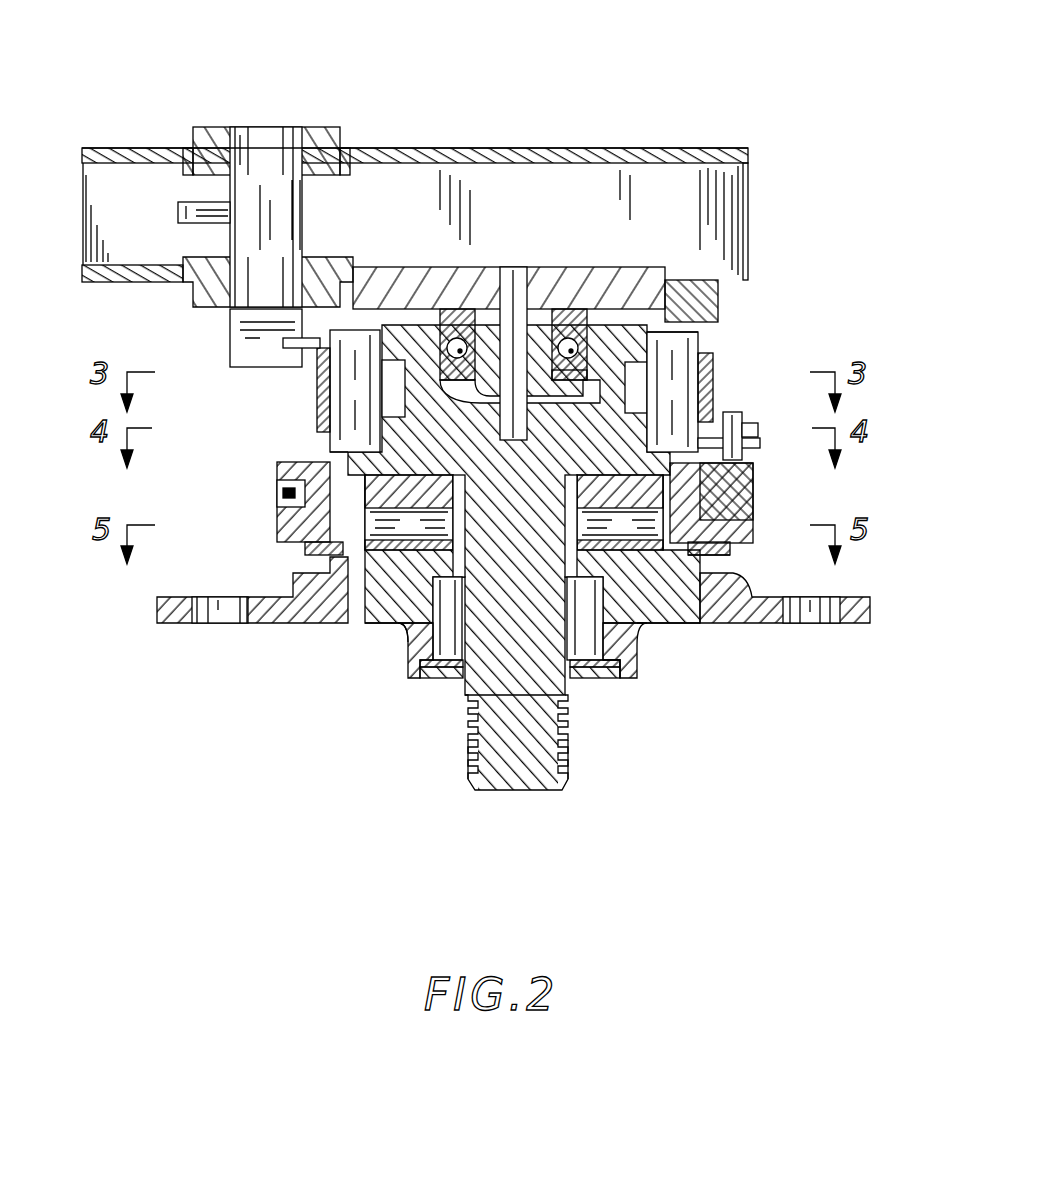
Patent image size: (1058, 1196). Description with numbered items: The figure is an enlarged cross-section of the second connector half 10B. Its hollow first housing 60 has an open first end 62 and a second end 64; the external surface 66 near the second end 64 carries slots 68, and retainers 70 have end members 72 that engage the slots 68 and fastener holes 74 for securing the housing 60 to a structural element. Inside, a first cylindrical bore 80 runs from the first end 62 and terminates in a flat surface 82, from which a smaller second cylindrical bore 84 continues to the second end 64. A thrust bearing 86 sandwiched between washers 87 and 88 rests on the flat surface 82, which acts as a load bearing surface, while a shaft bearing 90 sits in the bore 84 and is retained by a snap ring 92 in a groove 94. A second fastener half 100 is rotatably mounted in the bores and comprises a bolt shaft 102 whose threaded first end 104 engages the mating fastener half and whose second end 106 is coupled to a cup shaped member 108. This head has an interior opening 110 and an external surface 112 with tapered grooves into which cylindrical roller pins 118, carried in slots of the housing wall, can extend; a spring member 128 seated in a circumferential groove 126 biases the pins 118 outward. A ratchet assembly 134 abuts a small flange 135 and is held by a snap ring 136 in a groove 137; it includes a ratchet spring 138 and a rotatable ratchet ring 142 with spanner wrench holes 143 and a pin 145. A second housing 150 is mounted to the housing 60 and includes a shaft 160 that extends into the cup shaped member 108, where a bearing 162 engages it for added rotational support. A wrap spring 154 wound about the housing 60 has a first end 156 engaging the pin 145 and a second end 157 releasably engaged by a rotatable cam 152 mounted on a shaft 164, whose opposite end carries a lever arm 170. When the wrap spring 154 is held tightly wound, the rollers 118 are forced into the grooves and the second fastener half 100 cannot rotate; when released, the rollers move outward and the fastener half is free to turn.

The second connector half 10B is at (718, 90).
The second housing 150 is at (568, 150).
The lever arm 170 is at (180, 210).
The shaft 164 is at (320, 205).
The interior opening 110 is at (457, 336).
The cup shaped member 108 is at (503, 370).
The bearing 162 is at (570, 337).
The open first end 62 is at (688, 280).
The first housing 60 is at (722, 293).
The external surface 112 is at (648, 338).
The shaft 160 is at (577, 388).
The circumferential groove 126 is at (650, 372).
The spring member 128 is at (705, 362).
The pin 145 is at (733, 412).
The first end 156 is at (752, 428).
The second fastener half 100 is at (700, 443).
The washer 88 is at (690, 472).
The ratchet ring 142 is at (757, 492).
The thrust bearing 86 is at (665, 516).
The ratchet spring 138 is at (732, 548).
The second end 106 is at (700, 556).
The cam 152 is at (230, 328).
The second end 157 is at (283, 343).
The wrap spring 154 is at (320, 378).
The first cylindrical bore 80 is at (372, 460).
The roller pins 118 is at (380, 445).
The flange 135 is at (330, 462).
The spanner wrench holes 143 is at (277, 488).
The ratchet assembly 134 is at (278, 511).
The snap ring 136 is at (305, 548).
The external surface 66 is at (330, 562).
The fastener holes 74 is at (213, 607).
The retainers 70 is at (262, 625).
The end members 72 is at (342, 623).
The groove 137 is at (347, 625).
The flat surface 82 is at (393, 540).
The second cylindrical bore 84 is at (452, 612).
The second end 64 is at (617, 678).
The snap ring 92 is at (580, 680).
The groove 94 is at (622, 668).
The bolt shaft 102 is at (490, 792).
The threaded first end 104 is at (558, 792).
The shaft bearing 90 is at (612, 600).
The washer 87 is at (690, 622).
The slots 68 is at (730, 598).